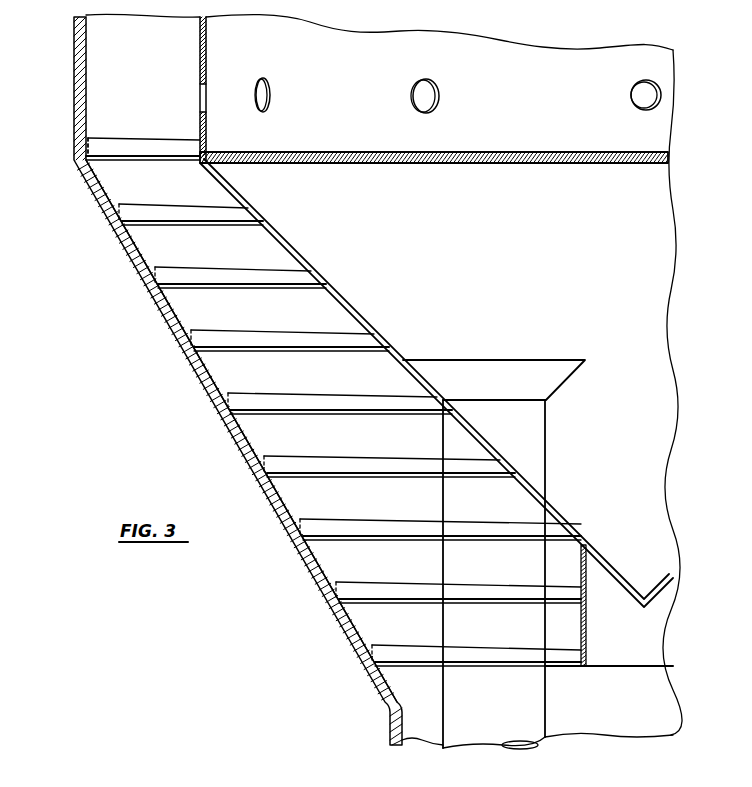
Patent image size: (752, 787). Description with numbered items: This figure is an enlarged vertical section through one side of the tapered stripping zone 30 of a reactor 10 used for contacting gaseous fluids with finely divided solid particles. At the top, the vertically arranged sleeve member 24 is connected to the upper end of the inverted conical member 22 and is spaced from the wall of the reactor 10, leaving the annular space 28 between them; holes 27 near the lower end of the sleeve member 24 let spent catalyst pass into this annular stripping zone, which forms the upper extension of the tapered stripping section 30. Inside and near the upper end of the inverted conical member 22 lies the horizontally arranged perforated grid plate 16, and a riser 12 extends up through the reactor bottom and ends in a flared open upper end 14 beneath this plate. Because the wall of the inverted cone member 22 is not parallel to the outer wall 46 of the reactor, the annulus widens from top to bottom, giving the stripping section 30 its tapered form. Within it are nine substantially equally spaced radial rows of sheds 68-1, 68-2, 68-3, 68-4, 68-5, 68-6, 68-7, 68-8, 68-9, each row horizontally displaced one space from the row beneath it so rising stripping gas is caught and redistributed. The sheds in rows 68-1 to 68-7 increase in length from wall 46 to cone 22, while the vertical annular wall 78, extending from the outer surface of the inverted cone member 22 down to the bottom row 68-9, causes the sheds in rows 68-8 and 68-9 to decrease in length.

The reactor 10 is at (74, 50).
The annular space 28 is at (103, 94).
The sleeve member 24 is at (200, 47).
The holes 27 is at (203, 97).
The grid plate 16 is at (500, 152).
The row of sheds 68-1 is at (131, 148).
The row of sheds 68-2 is at (162, 212).
The row of sheds 68-3 is at (200, 275).
The row of sheds 68-4 is at (247, 336).
The row of sheds 68-5 is at (293, 398).
The row of sheds 68-6 is at (333, 462).
The row of sheds 68-7 is at (347, 528).
The row of sheds 68-8 is at (370, 590).
The row of sheds 68-9 is at (400, 656).
The tapered stripping section 30 is at (197, 302).
The wall 46 is at (192, 365).
The inverted conical member 22 is at (346, 299).
The flared open upper end 14 is at (505, 368).
The riser 12 is at (530, 436).
The vertical annular wall 78 is at (586, 636).